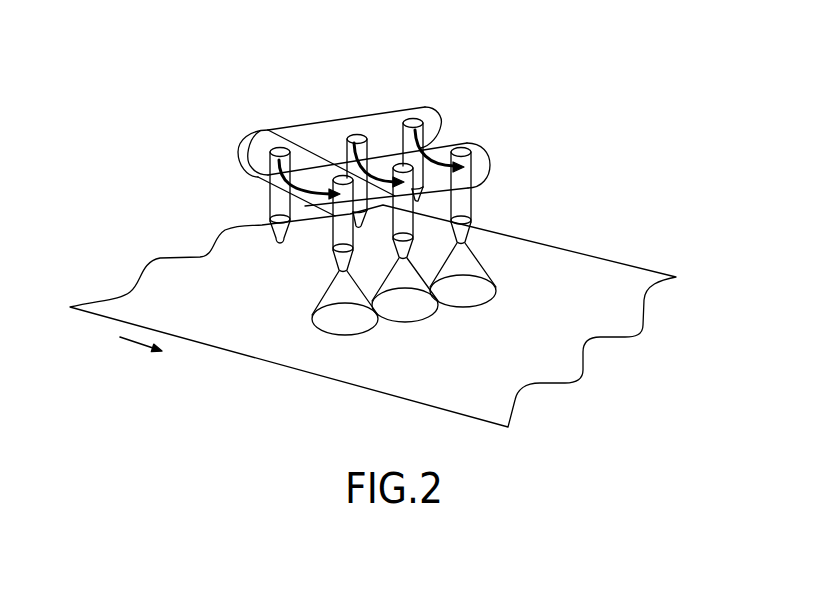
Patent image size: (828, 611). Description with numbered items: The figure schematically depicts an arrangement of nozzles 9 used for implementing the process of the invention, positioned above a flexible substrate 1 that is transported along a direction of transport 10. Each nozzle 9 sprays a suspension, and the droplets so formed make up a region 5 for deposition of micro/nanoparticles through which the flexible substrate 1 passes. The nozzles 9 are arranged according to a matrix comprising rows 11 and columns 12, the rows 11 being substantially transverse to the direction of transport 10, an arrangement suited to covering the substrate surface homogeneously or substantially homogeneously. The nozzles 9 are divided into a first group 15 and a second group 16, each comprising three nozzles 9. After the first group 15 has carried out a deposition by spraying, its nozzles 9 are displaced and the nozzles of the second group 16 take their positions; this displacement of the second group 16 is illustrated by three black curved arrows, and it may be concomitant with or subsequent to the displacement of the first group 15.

The flexible substrate 1 is at (550, 257).
The region for deposition 5 is at (467, 259).
The nozzle 9 is at (456, 147).
The direction of transport 10 is at (143, 348).
The row 11 is at (383, 113).
The column 12 is at (262, 131).
The first group of nozzles 15 is at (474, 155).
The second group of nozzles 16 is at (357, 119).